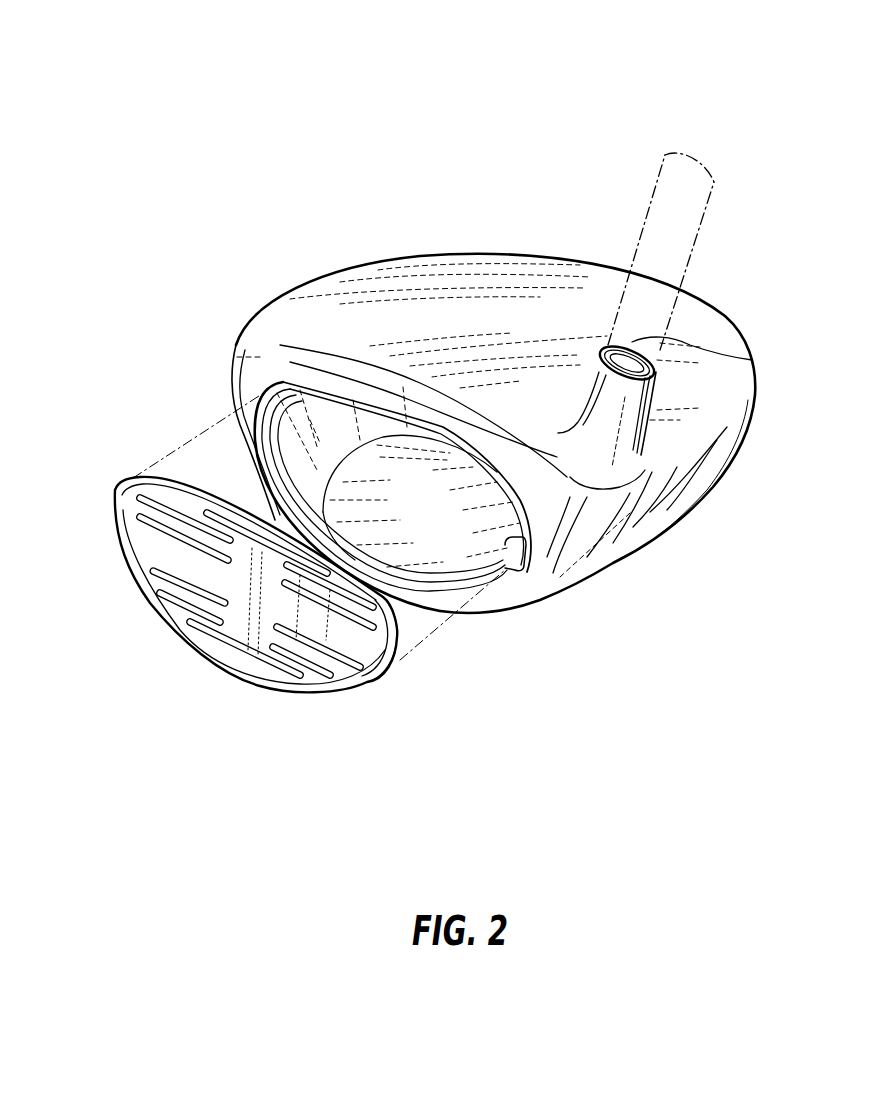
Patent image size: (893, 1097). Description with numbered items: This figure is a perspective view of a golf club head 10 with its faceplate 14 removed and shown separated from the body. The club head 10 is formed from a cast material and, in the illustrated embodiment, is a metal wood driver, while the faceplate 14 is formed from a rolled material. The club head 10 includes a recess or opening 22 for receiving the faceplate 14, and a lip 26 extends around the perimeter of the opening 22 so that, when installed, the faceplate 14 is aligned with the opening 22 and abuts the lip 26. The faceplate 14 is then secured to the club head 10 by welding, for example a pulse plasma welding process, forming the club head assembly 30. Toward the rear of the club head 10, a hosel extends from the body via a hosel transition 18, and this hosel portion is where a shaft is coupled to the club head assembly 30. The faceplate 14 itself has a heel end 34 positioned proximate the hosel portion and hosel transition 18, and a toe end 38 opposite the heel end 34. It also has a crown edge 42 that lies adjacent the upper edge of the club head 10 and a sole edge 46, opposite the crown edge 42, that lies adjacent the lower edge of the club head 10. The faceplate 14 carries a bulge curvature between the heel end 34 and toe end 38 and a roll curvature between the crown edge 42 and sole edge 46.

The golf club head 10 is at (304, 247).
The faceplate 14 is at (261, 580).
The hosel transition 18 is at (748, 360).
The opening 22 is at (517, 572).
The lip 26 is at (257, 413).
The club head assembly 30 is at (181, 112).
The heel end 34 is at (397, 640).
The toe end 38 is at (117, 532).
The crown edge 42 is at (238, 497).
The sole edge 46 is at (233, 673).